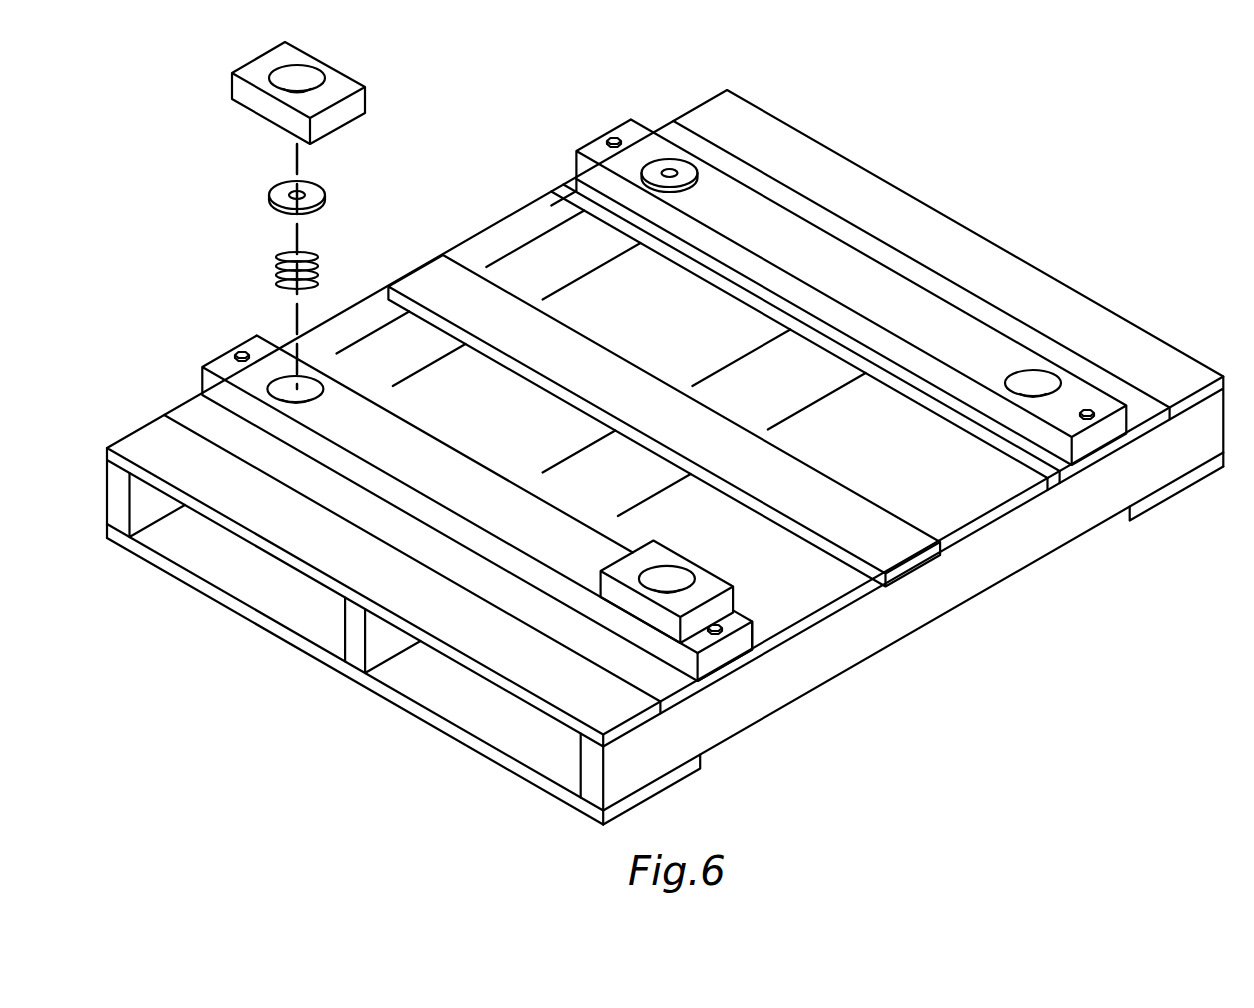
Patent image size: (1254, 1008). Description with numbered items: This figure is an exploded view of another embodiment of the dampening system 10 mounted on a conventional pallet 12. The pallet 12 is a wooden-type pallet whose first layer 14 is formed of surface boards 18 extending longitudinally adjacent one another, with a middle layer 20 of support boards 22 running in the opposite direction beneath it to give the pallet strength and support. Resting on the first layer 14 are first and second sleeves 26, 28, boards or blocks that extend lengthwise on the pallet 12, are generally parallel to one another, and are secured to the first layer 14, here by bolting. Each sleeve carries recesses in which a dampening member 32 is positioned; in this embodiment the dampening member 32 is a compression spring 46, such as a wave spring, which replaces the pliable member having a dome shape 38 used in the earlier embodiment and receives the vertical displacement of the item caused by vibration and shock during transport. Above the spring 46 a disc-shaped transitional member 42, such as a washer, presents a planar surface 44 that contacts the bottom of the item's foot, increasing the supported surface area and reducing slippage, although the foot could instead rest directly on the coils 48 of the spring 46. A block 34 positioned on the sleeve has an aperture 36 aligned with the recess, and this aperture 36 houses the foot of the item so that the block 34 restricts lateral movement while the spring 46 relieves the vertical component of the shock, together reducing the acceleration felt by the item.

The dampening system 10 is at (671, 431).
The pallet 12 is at (1036, 268).
The first layer 14 is at (866, 182).
The surface boards 18 is at (1132, 330).
The middle layer 20 is at (335, 613).
The support boards 22 is at (932, 600).
The first sleeve 26 is at (593, 160).
The second sleeve 28 is at (458, 465).
The dampening member 32 is at (297, 266).
The block 34 is at (258, 74).
The aperture 36 is at (301, 76).
The dome shape 38 is at (1038, 382).
The transitional member 42 is at (315, 193).
The planar surface 44 is at (283, 196).
The compression spring 46 is at (284, 263).
The coils 48 is at (283, 290).